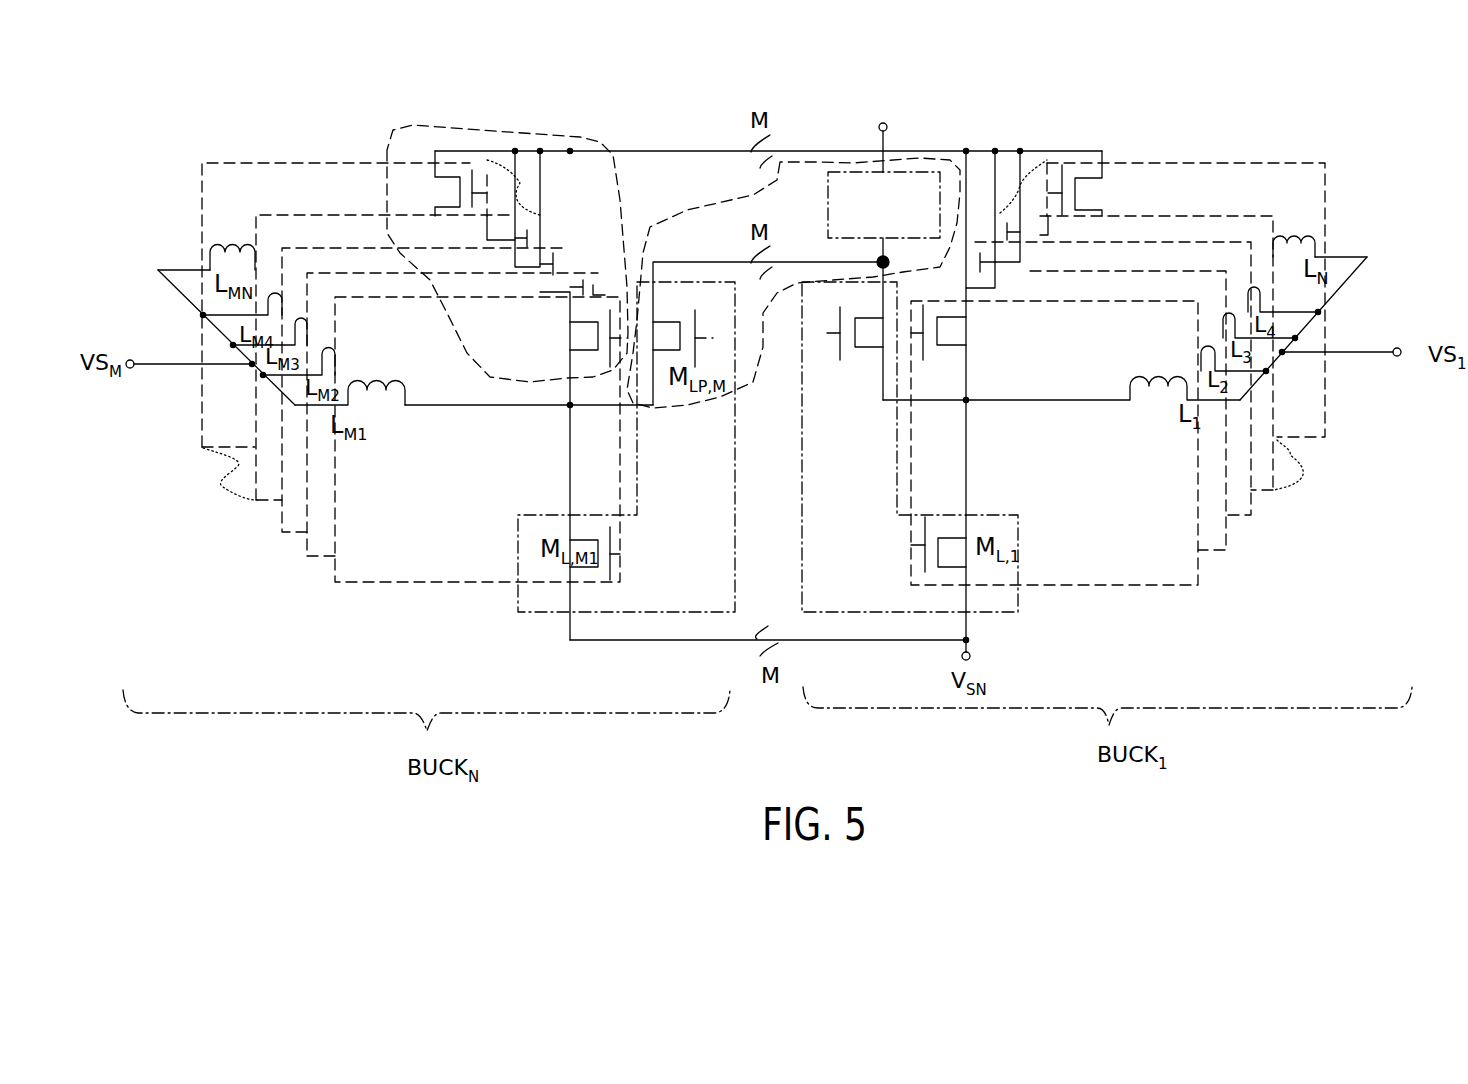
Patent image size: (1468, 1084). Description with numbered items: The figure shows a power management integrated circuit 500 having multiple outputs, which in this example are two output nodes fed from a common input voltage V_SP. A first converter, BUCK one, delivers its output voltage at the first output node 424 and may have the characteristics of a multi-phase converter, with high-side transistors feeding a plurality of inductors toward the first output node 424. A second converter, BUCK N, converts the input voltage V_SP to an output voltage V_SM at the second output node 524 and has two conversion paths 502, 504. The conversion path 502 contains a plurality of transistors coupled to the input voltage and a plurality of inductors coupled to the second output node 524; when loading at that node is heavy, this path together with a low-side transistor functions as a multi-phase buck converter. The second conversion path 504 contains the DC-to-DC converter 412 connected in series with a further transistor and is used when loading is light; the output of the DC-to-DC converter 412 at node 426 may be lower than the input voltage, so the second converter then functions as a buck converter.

The power management integrated circuit 500 is at (183, 114).
The conversion path 502 is at (480, 128).
The second conversion path 504 is at (941, 158).
The DC-to-DC converter 412 is at (858, 169).
The node 426 is at (907, 257).
The second output node 524 is at (189, 352).
The first output node 424 is at (1351, 339).